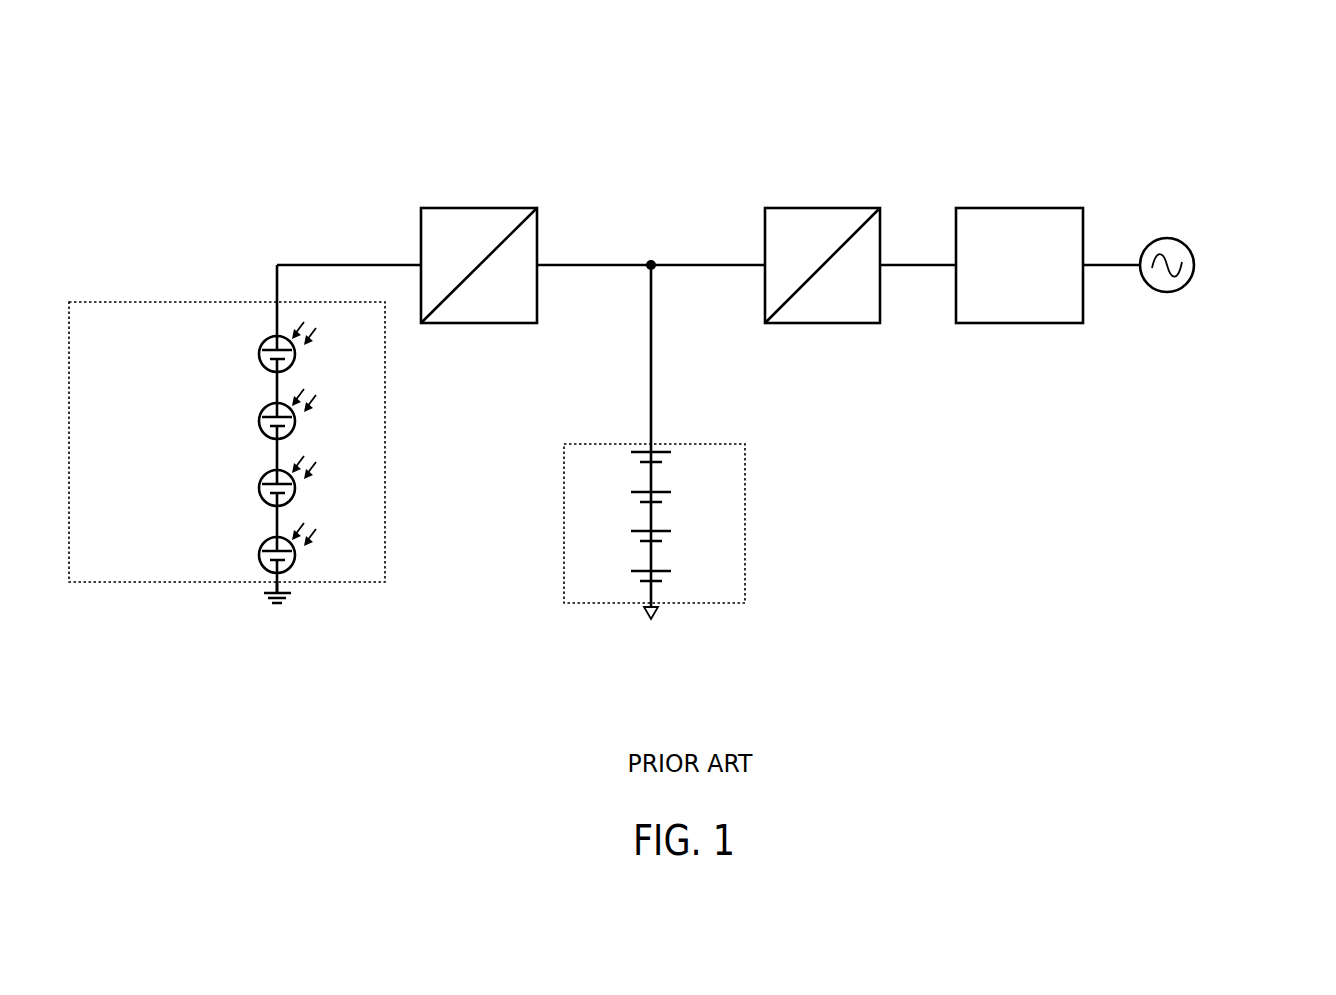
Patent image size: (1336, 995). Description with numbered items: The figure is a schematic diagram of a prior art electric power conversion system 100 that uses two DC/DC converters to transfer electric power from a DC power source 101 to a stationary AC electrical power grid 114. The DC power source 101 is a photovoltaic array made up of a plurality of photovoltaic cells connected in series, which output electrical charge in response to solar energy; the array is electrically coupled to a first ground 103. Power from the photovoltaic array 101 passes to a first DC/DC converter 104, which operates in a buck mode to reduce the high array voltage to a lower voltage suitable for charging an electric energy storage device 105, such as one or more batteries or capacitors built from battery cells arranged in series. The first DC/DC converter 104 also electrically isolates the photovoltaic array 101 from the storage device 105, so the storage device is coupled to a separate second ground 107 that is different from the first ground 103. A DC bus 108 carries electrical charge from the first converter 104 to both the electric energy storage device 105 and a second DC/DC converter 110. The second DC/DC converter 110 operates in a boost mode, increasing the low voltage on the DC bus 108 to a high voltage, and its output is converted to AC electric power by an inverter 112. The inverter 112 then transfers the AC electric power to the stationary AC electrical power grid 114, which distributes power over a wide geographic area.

The electric power conversion system 100 is at (110, 66).
The DC power source 101 is at (160, 296).
The first ground 103 is at (280, 606).
The first DC/DC converter 104 is at (510, 323).
The electric energy storage device 105 is at (561, 466).
The second ground 107 is at (655, 622).
The DC bus 108 is at (660, 268).
The second DC/DC converter 110 is at (820, 323).
The inverter 112 is at (1023, 323).
The stationary AC electrical power grid 114 is at (1168, 292).